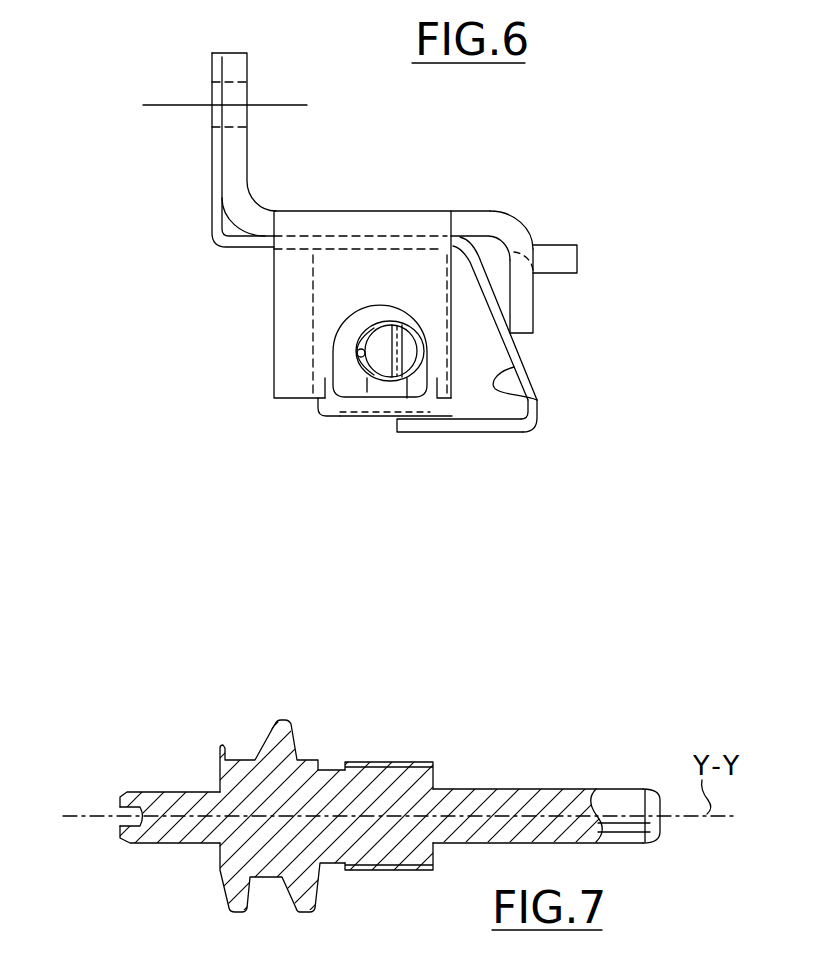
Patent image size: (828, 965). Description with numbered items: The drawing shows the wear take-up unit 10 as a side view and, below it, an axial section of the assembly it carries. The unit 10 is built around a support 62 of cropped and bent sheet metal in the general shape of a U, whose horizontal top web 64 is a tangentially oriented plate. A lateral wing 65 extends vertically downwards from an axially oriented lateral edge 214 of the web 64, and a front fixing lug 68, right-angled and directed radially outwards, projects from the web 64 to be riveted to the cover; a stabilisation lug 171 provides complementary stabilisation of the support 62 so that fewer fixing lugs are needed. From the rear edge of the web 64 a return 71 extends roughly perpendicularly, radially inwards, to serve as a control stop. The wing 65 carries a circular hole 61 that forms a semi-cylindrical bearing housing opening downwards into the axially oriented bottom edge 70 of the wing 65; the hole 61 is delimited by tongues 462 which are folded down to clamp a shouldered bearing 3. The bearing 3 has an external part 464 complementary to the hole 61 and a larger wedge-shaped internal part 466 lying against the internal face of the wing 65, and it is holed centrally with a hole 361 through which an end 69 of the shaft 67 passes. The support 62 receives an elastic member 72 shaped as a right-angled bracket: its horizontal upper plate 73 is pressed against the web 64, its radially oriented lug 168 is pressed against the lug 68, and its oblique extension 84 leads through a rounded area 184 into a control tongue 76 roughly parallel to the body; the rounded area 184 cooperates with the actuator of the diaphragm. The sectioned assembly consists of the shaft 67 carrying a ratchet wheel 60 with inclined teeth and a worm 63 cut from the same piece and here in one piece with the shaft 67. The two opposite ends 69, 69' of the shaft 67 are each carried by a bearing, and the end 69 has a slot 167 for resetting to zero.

In FIG. 6, the unit 10 is at (572, 178).
In FIG. 6, the front fixing lug 68 is at (250, 68).
In FIG. 6, the radially oriented lug 168 is at (212, 152).
In FIG. 6, the horizontal upper plate 73 is at (250, 247).
In FIG. 6, the axially oriented lateral edge 214 is at (302, 210).
In FIG. 6, the support 62 is at (498, 202).
In FIG. 6, the horizontal top web 64 is at (466, 217).
In FIG. 6, the stabilisation lug 171 is at (578, 258).
In FIG. 6, the return 71 is at (525, 302).
In FIG. 6, the lateral wing 65 is at (288, 350).
In FIG. 6, the internal part 466 is at (312, 312).
In FIG. 6, the circular hole 61 is at (360, 318).
In FIG. 6, the external part 464 is at (345, 340).
In FIG. 6, the hole 361 is at (362, 355).
In FIG. 6, the end 69 is at (429, 351).
In FIG. 7, the end 69 is at (138, 796).
In FIG. 6, the bottom edge 70 is at (293, 402).
In FIG. 6, the bearing 3 is at (367, 400).
In FIG. 6, the tongue 462 is at (338, 416).
In FIG. 6, the shaft 67 is at (408, 400).
In FIG. 7, the shaft 67 is at (515, 783).
In FIG. 6, the elastic member 72 is at (537, 373).
In FIG. 6, the oblique extension 84 is at (495, 381).
In FIG. 6, the rounded area 184 is at (537, 430).
In FIG. 6, the control tongue 76 is at (487, 435).
In FIG. 7, the slot 167 is at (128, 818).
In FIG. 7, the worm 63 is at (298, 733).
In FIG. 7, the ratchet wheel 60 is at (390, 755).
In FIG. 7, the end 69' is at (660, 836).